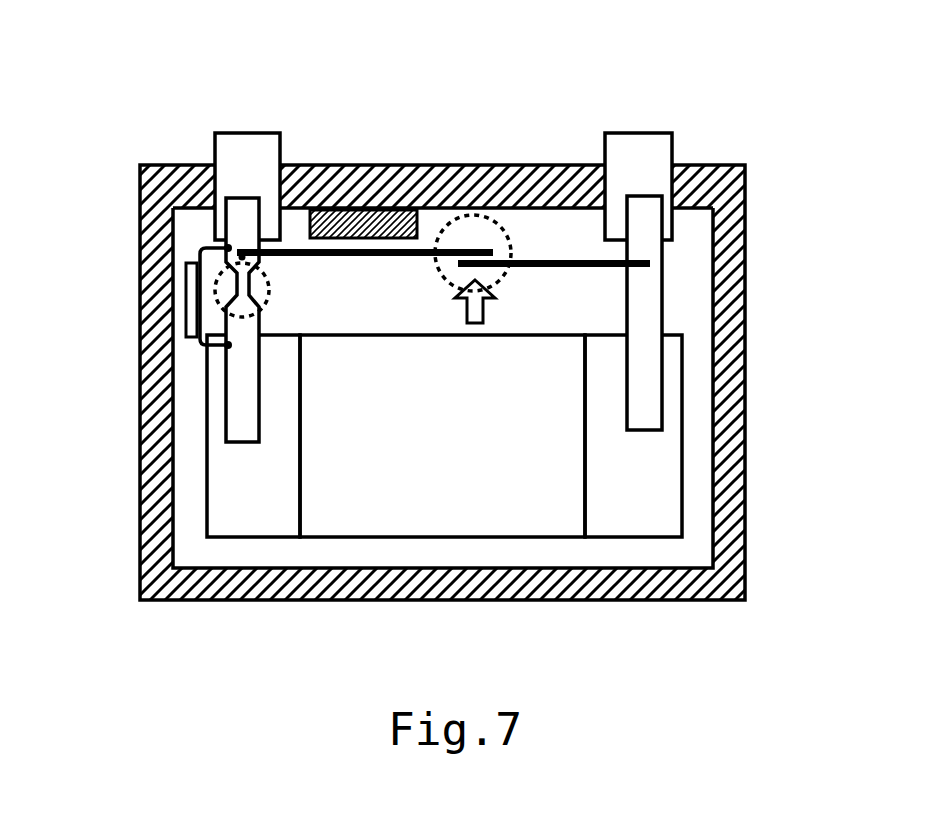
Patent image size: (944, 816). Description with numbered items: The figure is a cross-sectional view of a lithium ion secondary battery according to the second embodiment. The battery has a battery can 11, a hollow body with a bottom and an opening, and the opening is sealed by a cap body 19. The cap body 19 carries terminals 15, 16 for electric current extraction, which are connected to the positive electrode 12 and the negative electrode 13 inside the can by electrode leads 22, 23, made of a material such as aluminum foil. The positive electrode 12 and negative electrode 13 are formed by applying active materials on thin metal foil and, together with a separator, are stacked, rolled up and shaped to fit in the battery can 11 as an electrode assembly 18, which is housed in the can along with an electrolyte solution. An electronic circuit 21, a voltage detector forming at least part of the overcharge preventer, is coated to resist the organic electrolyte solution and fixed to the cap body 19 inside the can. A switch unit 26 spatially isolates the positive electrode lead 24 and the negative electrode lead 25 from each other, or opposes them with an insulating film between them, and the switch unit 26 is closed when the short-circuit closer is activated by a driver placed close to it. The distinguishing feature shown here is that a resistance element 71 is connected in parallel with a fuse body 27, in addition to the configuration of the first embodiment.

The battery can 11 is at (745, 397).
The positive electrode 12 is at (648, 525).
The negative electrode 13 is at (255, 525).
The terminal 15 is at (638, 150).
The terminal 16 is at (238, 150).
The electrode assembly 18 is at (446, 525).
The cap body 19 is at (512, 180).
The electronic circuit 21 is at (398, 207).
The electrode lead 22 is at (648, 302).
The electrode lead 23 is at (240, 385).
The positive electrode lead 24 is at (562, 258).
The negative electrode lead 25 is at (287, 250).
The switch unit 26 is at (472, 218).
The fuse body 27 is at (220, 295).
The resistance element 71 is at (188, 277).